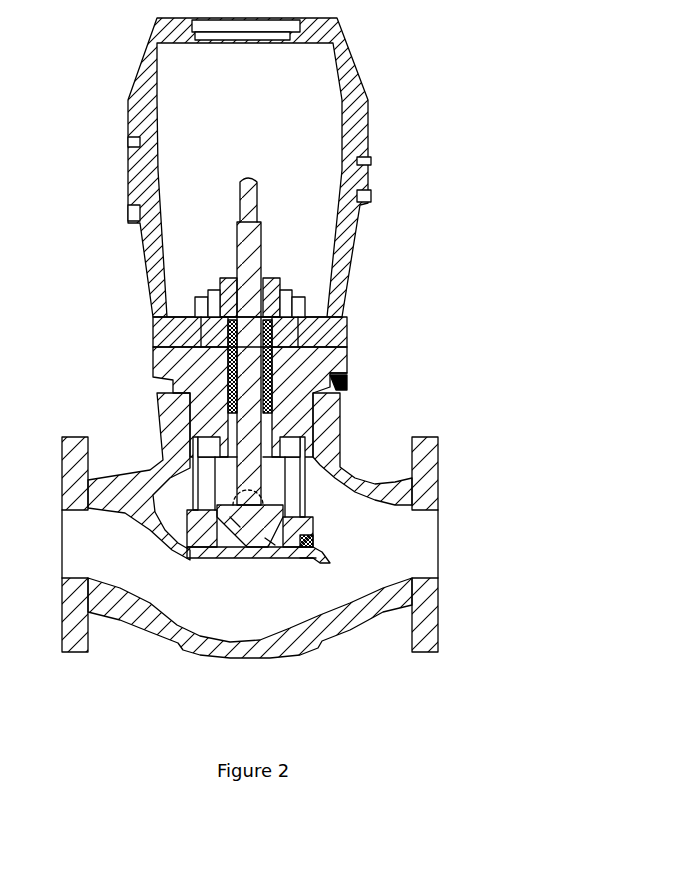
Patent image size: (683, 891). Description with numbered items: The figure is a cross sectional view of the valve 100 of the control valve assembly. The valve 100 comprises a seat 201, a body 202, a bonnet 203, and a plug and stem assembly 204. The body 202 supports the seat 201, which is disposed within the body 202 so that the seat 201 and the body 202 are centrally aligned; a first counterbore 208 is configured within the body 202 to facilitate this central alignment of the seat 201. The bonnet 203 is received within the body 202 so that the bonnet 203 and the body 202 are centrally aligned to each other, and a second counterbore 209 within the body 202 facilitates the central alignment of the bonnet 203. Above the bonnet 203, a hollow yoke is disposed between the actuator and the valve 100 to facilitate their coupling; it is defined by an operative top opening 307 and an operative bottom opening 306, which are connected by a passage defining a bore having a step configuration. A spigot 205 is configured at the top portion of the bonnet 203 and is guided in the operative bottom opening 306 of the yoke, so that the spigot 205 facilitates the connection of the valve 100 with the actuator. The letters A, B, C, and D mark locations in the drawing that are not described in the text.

The valve 100 is at (432, 50).
The seat 201 is at (318, 524).
The body 202 is at (347, 437).
The bonnet 203 is at (348, 360).
The plug and stem assembly 204 is at (253, 445).
The spigot 205 is at (197, 333).
The first counterbore 208 is at (315, 538).
The second counterbore 209 is at (342, 390).
The operative bottom opening 306 is at (300, 328).
The operative top opening 307 is at (192, 26).
The region A is at (347, 380).
The region B is at (308, 560).
The region C is at (272, 542).
The region D is at (238, 523).